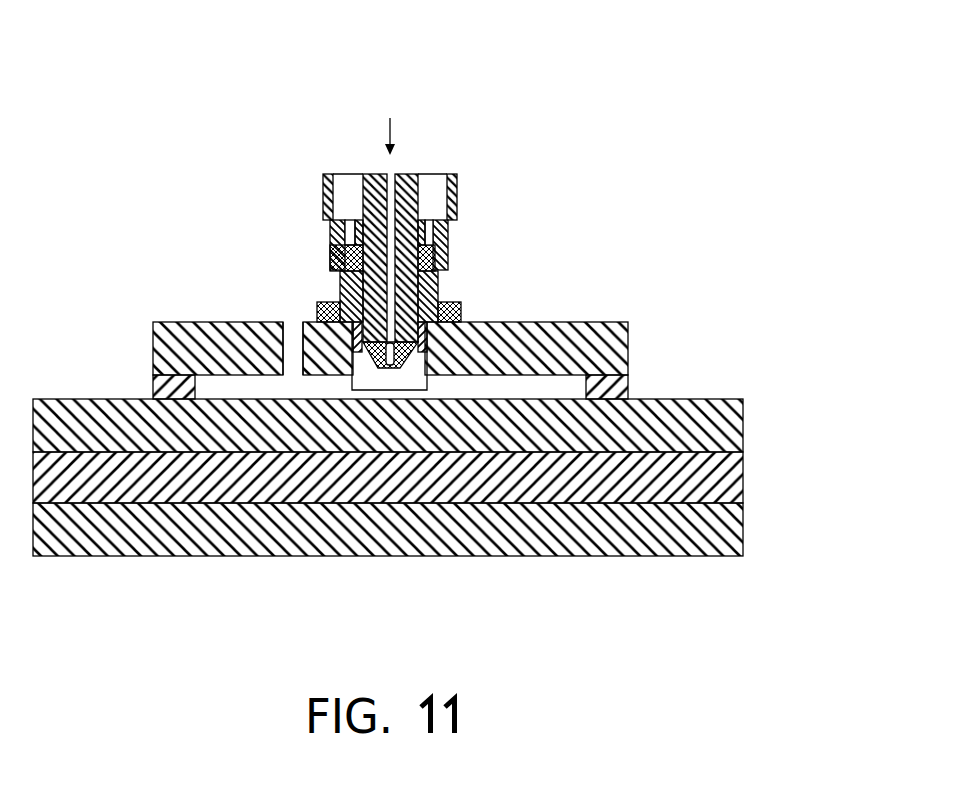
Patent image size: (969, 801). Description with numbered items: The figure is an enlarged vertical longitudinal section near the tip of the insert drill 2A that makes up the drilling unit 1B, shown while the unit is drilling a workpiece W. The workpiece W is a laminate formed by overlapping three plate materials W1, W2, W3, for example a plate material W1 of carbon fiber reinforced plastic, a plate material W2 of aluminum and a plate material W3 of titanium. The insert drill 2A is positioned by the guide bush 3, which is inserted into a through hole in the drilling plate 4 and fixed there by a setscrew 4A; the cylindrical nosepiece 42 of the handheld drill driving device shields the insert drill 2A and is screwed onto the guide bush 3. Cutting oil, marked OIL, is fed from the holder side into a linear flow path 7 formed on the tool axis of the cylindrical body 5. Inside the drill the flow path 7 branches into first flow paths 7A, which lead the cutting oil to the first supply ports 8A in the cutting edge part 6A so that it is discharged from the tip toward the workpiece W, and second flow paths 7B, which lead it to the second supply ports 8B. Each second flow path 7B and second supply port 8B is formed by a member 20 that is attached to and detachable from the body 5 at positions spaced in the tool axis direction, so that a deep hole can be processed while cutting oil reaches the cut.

The drilling unit 1B is at (221, 90).
The cutting oil OIL is at (392, 137).
The nosepiece 42 is at (324, 176).
The flow path 7 is at (392, 198).
The first flow paths 7A is at (382, 352).
The second flow paths 7B is at (332, 268).
The first supply port 8A is at (394, 355).
The second supply port 8B is at (340, 273).
The member 20 is at (323, 257).
The insert drill 2A is at (537, 212).
The body 5 is at (448, 245).
The cutting edge part 6A is at (450, 302).
The guide bush 3 is at (460, 315).
The drilling plate 4 is at (628, 350).
The setscrew 4A is at (258, 300).
The workpiece W is at (823, 425).
The plate material W1 is at (743, 428).
The plate material W2 is at (743, 483).
The plate material W3 is at (743, 535).